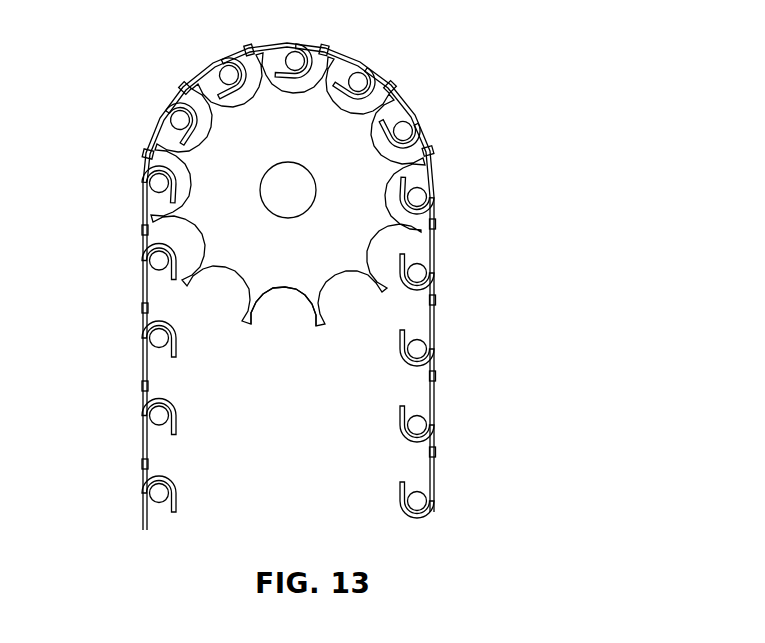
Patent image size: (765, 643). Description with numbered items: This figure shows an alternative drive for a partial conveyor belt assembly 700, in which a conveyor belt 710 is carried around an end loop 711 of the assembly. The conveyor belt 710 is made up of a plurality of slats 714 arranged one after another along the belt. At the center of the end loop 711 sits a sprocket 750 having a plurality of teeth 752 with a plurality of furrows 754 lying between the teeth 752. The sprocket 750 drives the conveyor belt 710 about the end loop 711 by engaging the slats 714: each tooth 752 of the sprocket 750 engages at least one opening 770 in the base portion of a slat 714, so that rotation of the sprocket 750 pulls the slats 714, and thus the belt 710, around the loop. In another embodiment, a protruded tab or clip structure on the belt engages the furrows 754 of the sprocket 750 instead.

The conveyor belt assembly 700 is at (542, 184).
The conveyor belt 710 is at (467, 395).
The end loop 711 is at (426, 76).
The slats 714 is at (436, 315).
The sprocket 750 is at (217, 160).
The teeth 752 is at (431, 147).
The furrows 754 is at (293, 288).
The opening 770 is at (432, 150).